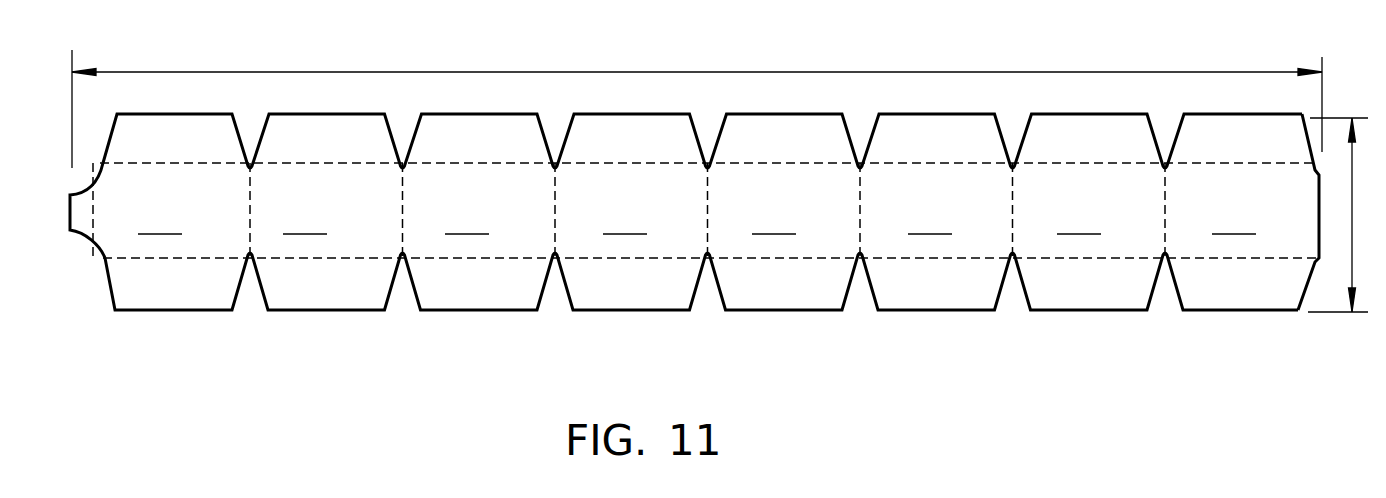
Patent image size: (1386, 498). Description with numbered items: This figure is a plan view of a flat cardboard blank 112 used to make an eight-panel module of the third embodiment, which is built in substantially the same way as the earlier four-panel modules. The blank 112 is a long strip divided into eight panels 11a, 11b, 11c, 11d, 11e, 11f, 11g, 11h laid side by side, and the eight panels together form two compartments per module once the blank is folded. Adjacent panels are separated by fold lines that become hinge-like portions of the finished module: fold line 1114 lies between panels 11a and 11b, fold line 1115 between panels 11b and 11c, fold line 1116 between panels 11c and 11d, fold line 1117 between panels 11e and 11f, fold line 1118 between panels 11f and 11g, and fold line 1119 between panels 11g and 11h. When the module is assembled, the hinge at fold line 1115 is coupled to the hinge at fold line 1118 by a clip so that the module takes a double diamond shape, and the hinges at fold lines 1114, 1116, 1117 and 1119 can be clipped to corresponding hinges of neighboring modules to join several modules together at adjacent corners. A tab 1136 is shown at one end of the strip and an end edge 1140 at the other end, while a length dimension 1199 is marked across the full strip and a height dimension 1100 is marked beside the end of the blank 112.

The blank 112 is at (863, 343).
The glue tab 1136 is at (75, 227).
The end edge 1140 is at (1318, 218).
The fold line 1114 is at (250, 215).
The fold line 1115 is at (403, 215).
The fold line 1116 is at (557, 213).
The fold line 1117 is at (858, 222).
The fold line 1118 is at (1012, 222).
The fold line 1119 is at (1165, 228).
The length dimension 1199 is at (697, 99).
The height dimension 1100 is at (1352, 240).
The panel 11a is at (160, 221).
The panel 11b is at (305, 221).
The panel 11c is at (467, 221).
The panel 11d is at (625, 221).
The panel 11e is at (774, 221).
The panel 11f is at (930, 221).
The panel 11g is at (1079, 221).
The panel 11h is at (1234, 221).